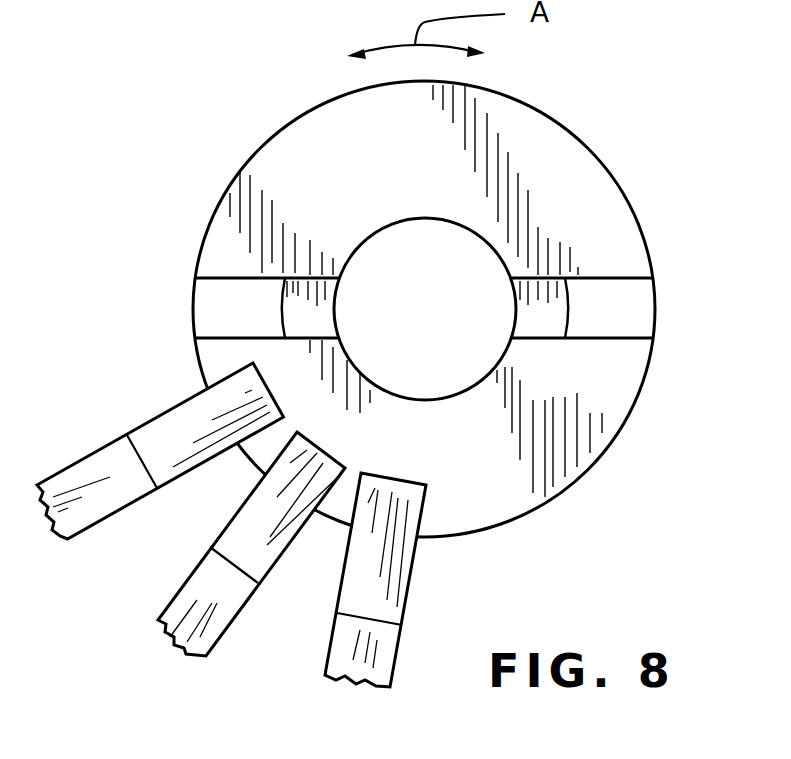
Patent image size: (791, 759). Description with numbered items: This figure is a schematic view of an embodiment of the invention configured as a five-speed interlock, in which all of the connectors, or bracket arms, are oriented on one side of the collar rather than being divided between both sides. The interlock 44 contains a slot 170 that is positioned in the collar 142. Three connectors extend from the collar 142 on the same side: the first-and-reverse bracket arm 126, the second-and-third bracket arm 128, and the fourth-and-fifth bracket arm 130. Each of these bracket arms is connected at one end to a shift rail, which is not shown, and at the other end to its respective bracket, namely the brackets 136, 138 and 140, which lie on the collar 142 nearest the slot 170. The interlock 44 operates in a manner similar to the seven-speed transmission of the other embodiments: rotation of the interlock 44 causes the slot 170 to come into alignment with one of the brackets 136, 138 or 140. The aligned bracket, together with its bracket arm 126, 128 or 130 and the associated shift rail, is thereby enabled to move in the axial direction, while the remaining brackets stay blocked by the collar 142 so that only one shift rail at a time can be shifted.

The interlock 44 is at (479, 309).
The collar 142 is at (592, 148).
The slot 170 is at (633, 280).
The 1/R bracket arm 126 is at (153, 440).
The 2/3 bracket arm 128 is at (250, 536).
The 4/5 bracket arm 130 is at (385, 588).
The bracket 136 is at (238, 390).
The bracket 138 is at (323, 452).
The bracket 140 is at (427, 507).